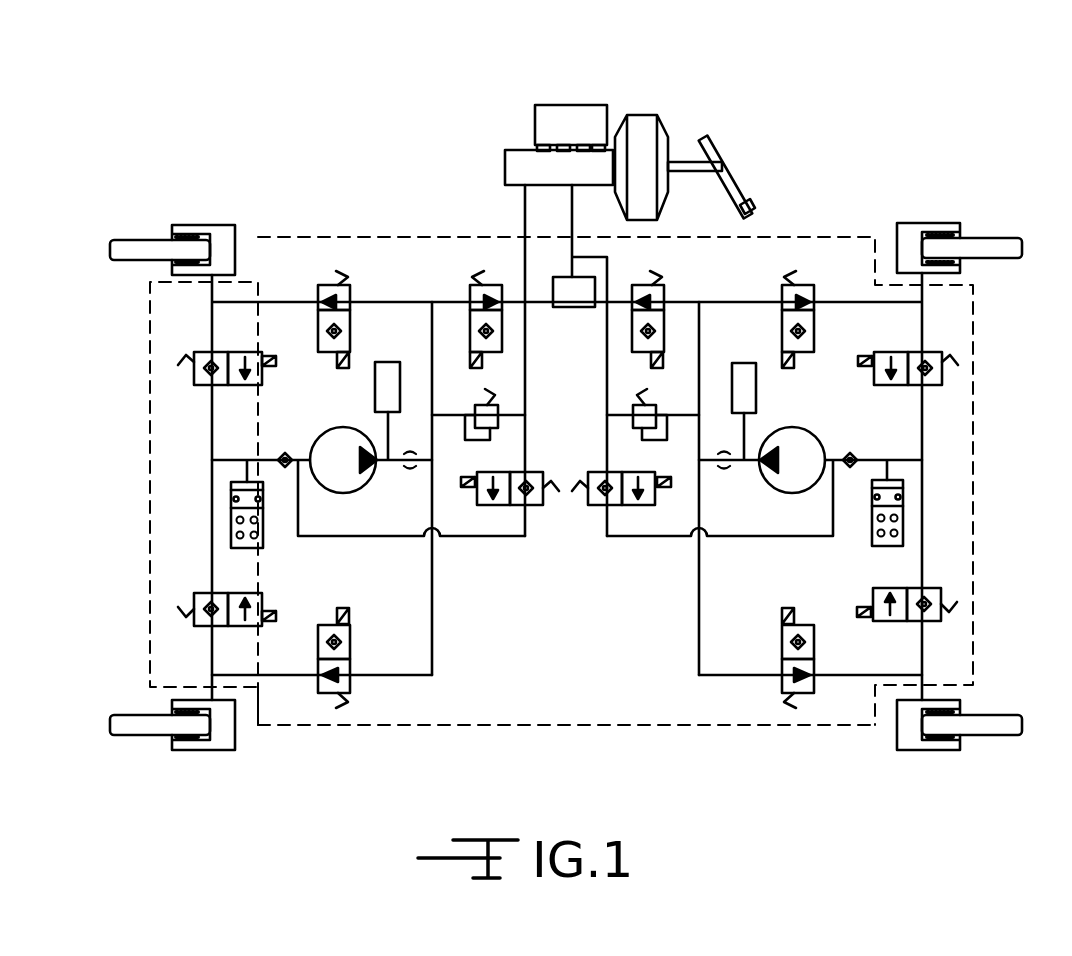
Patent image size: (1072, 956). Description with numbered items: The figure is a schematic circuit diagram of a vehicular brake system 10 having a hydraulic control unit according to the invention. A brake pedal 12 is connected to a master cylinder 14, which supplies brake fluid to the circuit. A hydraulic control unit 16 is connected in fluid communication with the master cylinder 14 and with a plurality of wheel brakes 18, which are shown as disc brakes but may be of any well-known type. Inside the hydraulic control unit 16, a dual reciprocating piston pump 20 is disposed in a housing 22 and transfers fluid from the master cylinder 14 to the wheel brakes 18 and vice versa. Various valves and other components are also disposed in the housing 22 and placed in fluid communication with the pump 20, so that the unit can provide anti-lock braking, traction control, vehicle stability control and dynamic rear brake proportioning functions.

The vehicular brake system 10 is at (270, 160).
The brake pedal 12 is at (727, 167).
The master cylinder 14 is at (502, 162).
The hydraulic control unit 16 is at (823, 237).
The wheel brakes 18 is at (190, 225).
The dual reciprocating piston pump 20 is at (352, 472).
The housing 22 is at (562, 727).